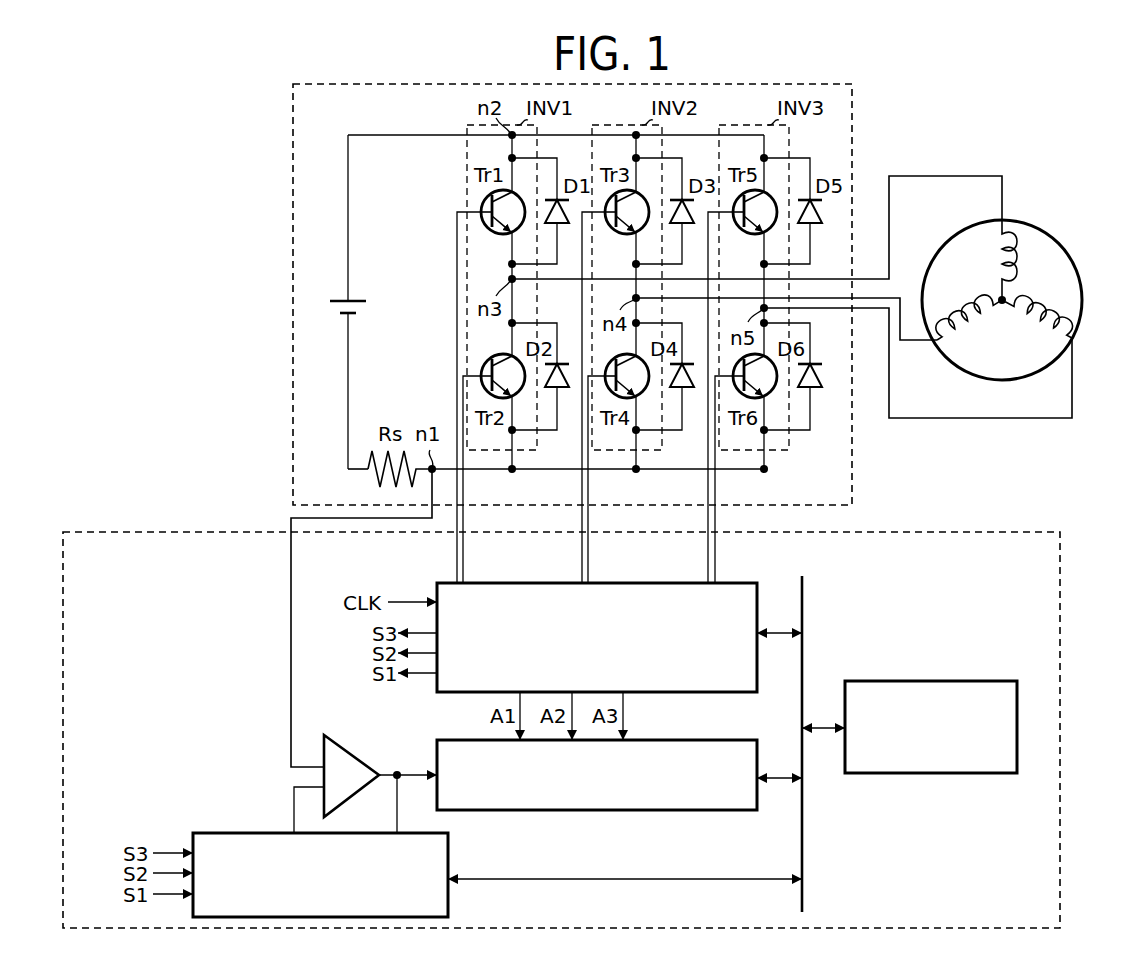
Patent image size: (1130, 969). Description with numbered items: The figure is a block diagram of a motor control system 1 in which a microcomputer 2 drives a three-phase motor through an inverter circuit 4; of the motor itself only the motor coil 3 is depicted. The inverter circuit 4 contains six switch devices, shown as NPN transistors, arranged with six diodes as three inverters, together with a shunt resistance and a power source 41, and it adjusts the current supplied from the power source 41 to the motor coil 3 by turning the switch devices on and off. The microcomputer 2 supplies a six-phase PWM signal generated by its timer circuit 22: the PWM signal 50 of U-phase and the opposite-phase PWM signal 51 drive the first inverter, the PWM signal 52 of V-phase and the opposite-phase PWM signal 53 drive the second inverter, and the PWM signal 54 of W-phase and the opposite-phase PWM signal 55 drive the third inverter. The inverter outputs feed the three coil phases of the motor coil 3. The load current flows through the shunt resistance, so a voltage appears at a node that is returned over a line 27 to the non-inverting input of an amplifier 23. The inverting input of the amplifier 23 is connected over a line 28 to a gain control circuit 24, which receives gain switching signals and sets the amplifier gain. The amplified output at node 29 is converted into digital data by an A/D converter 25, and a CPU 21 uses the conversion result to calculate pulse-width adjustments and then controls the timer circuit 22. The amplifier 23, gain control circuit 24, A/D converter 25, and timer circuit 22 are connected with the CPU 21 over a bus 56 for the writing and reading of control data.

The motor drive system 1 is at (230, 173).
The microcomputer 2 is at (962, 531).
The motor coil 3 is at (1040, 229).
The inverter circuit 4 is at (852, 113).
The power source 41 is at (352, 301).
The CPU 21 is at (962, 680).
The timer circuit 22 is at (692, 693).
The amplifier 23 is at (343, 748).
The gain control circuit 24 is at (449, 852).
The A/D converter 25 is at (696, 811).
The input line to amplifier 27 is at (290, 568).
The feedback line from gain control circuit 28 is at (292, 806).
The amplifier output node 29 is at (392, 771).
The PWM signal of U-phase 50 is at (455, 553).
The PWM signal of opposite phase of U-phase 51 is at (464, 568).
The PWM signal of V-phase 52 is at (581, 553).
The PWM signal of opposite phase of V-phase 53 is at (589, 568).
The PWM signal of W-phase 54 is at (706, 553).
The PWM signal of opposite phase of W-phase 55 is at (716, 568).
The bus 56 is at (803, 598).